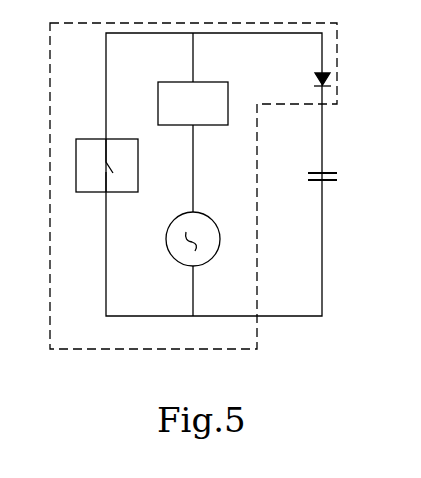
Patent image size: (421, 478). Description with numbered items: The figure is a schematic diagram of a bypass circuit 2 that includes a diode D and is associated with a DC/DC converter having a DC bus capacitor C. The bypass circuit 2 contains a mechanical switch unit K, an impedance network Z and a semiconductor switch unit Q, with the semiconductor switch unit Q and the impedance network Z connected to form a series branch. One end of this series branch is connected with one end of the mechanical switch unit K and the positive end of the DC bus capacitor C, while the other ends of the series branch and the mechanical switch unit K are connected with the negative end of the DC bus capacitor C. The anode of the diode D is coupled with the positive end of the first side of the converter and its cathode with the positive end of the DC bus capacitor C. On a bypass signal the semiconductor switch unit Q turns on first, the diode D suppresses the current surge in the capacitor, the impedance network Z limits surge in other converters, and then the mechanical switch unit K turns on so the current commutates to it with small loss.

The bypass circuit 2 is at (193, 186).
The mechanical switch unit K is at (97, 165).
The impedance network Z is at (193, 103).
The semiconductor switch unit Q is at (183, 239).
The diode D is at (310, 78).
The DC bus capacitor C is at (312, 178).